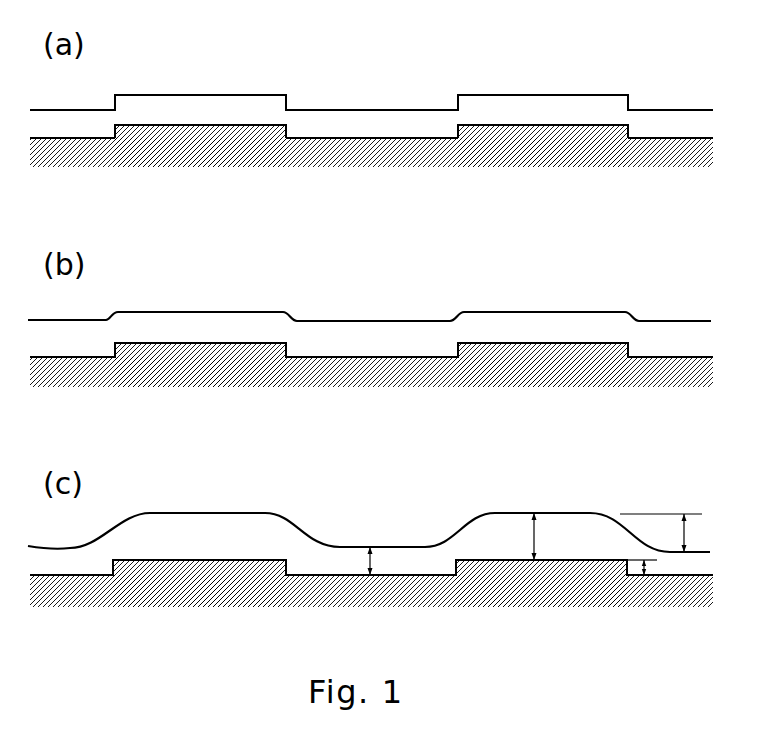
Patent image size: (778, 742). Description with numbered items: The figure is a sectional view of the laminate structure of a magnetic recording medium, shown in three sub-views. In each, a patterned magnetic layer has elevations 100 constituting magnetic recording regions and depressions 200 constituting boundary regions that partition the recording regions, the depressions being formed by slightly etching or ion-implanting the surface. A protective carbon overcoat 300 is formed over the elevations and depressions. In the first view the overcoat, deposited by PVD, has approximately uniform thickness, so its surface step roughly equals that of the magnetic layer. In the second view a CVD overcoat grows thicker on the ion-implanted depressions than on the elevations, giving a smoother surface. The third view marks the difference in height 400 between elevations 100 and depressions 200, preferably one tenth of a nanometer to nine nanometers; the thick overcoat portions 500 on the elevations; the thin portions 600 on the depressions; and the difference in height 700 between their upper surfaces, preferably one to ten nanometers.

The magnetic recording region (elevation) 100 is at (185, 143).
The boundary region (depression) 200 is at (360, 150).
The protective carbon overcoat 300 is at (540, 107).
The difference in height between elevation and depression 400 is at (648, 552).
The thickness of portions of carbon overcoat located on magnetic recording regions 500 is at (535, 512).
The thickness of portions of carbon overcoat located on boundary regions 600 is at (372, 542).
The difference in height between upper surfaces of carbon overcoat on magnetic recor 700 is at (690, 532).